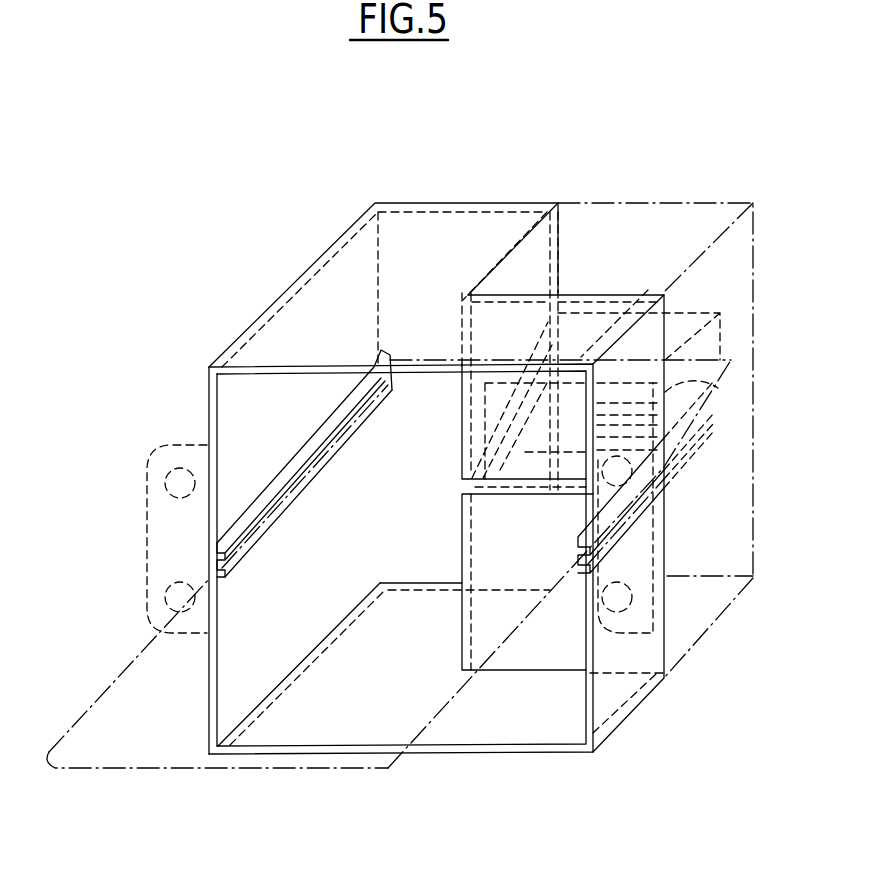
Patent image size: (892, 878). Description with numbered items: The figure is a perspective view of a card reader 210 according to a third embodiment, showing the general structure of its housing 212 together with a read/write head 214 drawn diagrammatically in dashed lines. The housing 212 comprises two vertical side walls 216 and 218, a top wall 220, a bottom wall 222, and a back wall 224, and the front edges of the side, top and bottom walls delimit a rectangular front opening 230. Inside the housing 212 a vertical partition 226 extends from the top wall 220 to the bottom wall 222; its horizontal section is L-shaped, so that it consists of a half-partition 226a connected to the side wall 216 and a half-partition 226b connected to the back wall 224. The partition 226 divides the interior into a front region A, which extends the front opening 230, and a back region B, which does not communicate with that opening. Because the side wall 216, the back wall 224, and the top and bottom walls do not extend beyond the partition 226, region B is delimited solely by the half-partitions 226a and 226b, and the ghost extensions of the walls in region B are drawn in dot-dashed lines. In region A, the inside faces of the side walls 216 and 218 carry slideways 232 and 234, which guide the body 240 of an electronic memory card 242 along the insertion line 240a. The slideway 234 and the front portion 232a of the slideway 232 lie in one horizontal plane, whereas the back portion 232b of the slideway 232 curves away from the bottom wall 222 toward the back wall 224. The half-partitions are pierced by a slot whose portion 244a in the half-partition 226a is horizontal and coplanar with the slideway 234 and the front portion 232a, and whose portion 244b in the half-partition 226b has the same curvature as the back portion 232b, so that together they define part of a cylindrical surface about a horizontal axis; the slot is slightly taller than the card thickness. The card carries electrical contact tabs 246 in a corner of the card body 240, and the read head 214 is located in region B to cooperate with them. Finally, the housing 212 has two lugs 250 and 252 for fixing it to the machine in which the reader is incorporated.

The card reader 210 is at (627, 748).
The housing 212 is at (477, 760).
The read/write head 214 is at (720, 357).
The side wall 216 is at (647, 638).
The side wall 218 is at (210, 668).
The top wall 220 is at (330, 283).
The bottom wall 222 is at (354, 715).
The back wall 224 is at (455, 250).
The partition 226 is at (572, 292).
The half-partition 226a is at (634, 290).
The half-partition 226b is at (514, 237).
The front opening 230 is at (299, 625).
The slideway 232 is at (337, 470).
The front portion of slideway 232a is at (278, 520).
The back portion of slideway 232b is at (342, 403).
The slideway 234 is at (563, 575).
The card body 240 is at (414, 667).
The insertion axis 240a is at (443, 358).
The electronic memory card 242 is at (139, 779).
The slot portion 244a is at (527, 483).
The slot portion 244b is at (485, 436).
The electrical contact tabs 246 is at (720, 386).
The lug 250 is at (147, 497).
The lug 252 is at (660, 537).
The front region A is at (255, 393).
The back region B is at (623, 233).